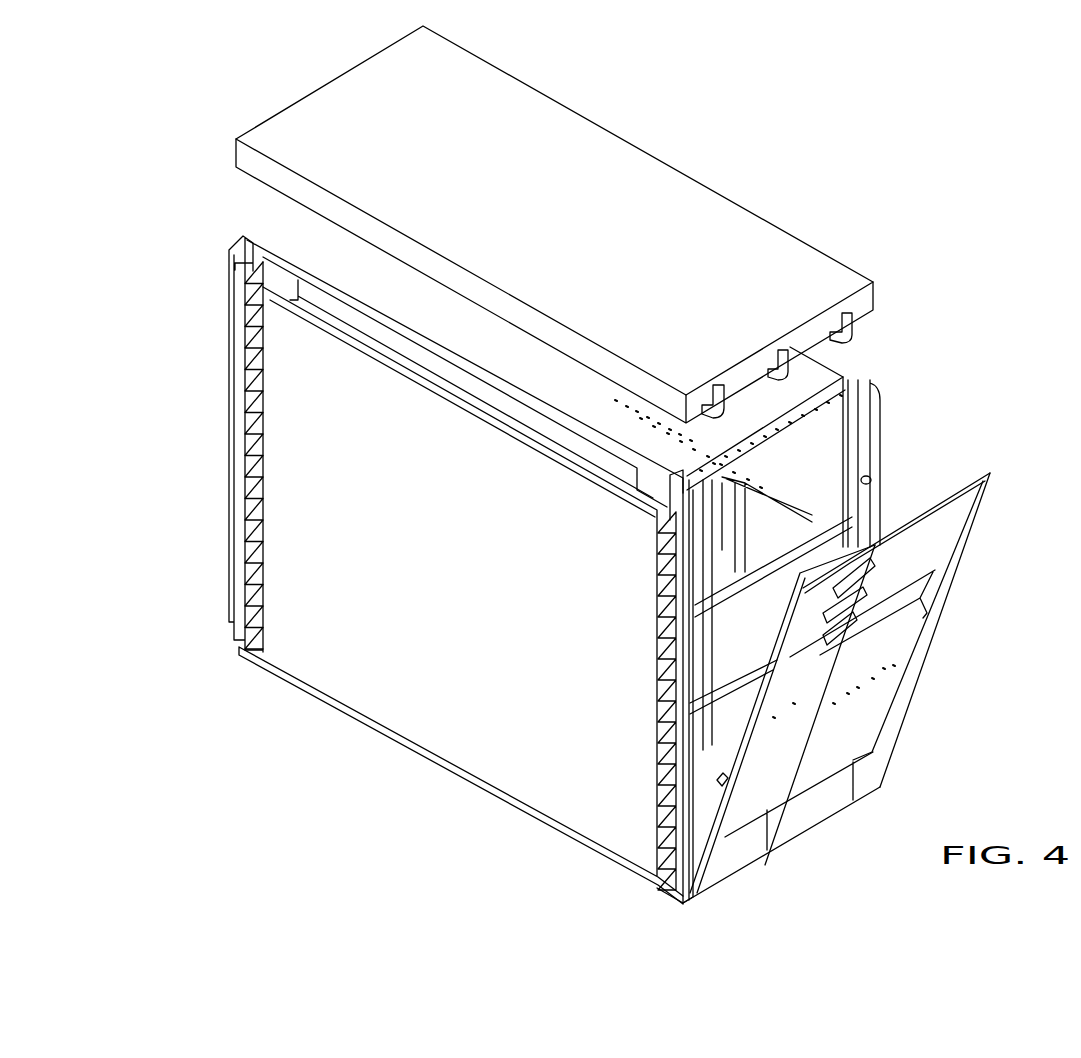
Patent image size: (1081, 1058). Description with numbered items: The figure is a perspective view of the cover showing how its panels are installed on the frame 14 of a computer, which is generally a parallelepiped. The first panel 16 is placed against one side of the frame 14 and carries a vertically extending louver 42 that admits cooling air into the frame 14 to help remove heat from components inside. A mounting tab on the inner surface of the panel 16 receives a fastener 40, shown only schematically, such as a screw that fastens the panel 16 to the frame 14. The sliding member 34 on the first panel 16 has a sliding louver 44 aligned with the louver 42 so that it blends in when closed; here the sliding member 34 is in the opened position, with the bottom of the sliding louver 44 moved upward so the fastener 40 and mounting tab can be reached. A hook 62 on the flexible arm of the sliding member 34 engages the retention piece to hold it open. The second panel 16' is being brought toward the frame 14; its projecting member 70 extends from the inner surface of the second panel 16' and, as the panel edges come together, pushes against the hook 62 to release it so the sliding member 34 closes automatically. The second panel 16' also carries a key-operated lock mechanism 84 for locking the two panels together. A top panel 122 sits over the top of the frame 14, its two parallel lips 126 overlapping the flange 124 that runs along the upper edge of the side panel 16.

The frame 14 is at (817, 377).
The panel 16 is at (461, 595).
The second panel 16' is at (893, 669).
The sliding member 34 is at (858, 433).
The fastener 40 is at (657, 620).
The louver 42 is at (248, 518).
The sliding louver 44 is at (255, 357).
The hook 62 is at (870, 478).
The projecting member 70 is at (960, 482).
The lock mechanism 84 is at (812, 712).
The top panel 122 is at (745, 303).
The flange 124 is at (463, 377).
The lips 126 is at (278, 182).